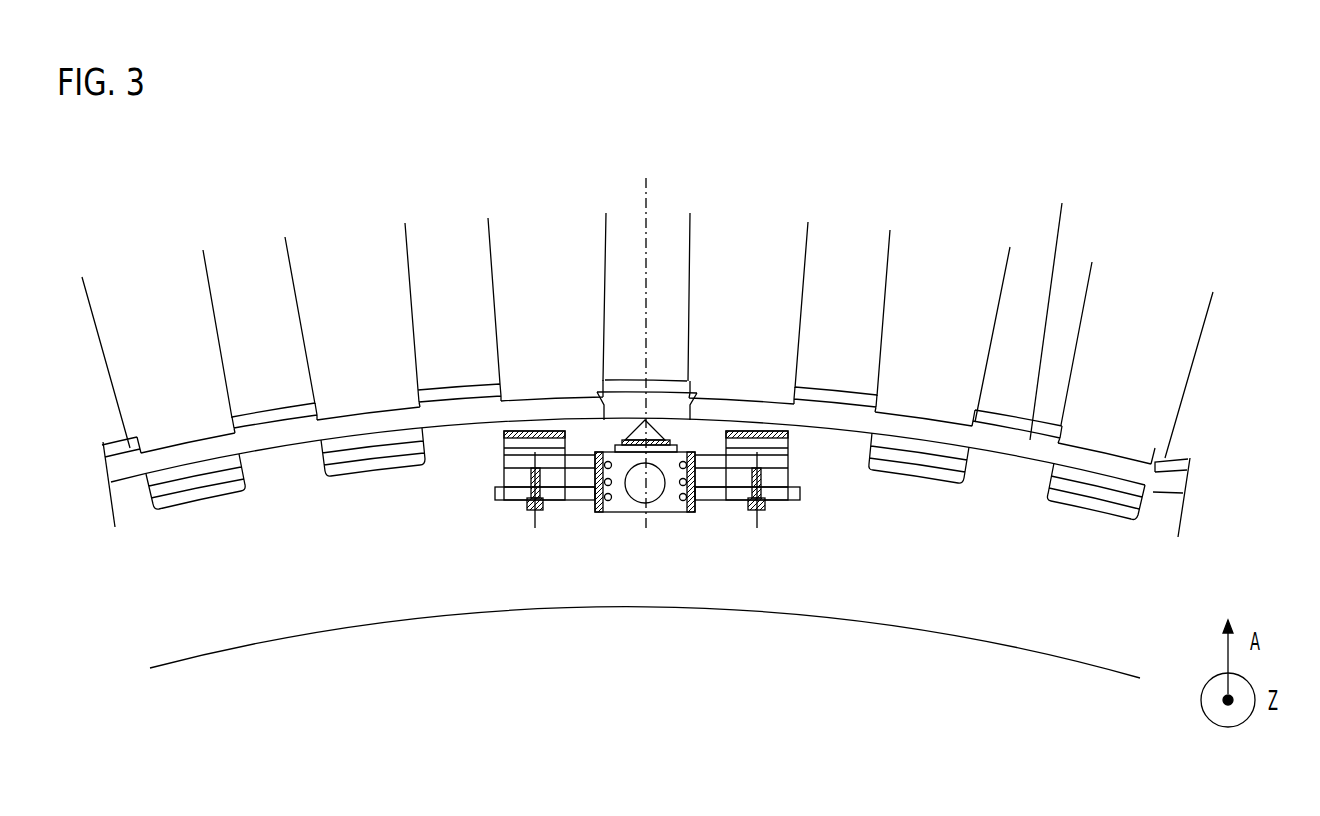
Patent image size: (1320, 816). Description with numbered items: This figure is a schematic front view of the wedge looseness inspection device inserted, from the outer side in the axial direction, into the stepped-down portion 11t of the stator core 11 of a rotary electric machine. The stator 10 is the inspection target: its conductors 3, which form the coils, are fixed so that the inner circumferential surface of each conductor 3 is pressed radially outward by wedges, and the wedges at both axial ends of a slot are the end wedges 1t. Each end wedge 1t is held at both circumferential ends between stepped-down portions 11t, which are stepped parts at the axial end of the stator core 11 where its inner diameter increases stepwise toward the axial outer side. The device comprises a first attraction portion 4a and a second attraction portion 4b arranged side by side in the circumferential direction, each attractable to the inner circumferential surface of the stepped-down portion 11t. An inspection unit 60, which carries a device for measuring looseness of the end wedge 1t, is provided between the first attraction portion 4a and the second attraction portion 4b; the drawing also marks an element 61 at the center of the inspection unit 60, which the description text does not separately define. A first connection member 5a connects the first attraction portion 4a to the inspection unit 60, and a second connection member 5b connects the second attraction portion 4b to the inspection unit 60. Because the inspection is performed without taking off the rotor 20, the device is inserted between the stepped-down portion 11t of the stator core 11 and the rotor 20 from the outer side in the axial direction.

The conductor 3 is at (244, 325).
The stator 10 is at (436, 188).
The sensor target / detection portion 61 is at (660, 397).
The end wedge 1t is at (1051, 303).
The stator core 11 is at (1153, 263).
The stepped-down portion 11t is at (1128, 466).
The second attraction portion 4b is at (500, 458).
The first attraction portion 4a is at (804, 470).
The second connection member 5b is at (573, 505).
The first connection member 5a is at (787, 508).
The inspection unit 60 is at (630, 512).
The rotor 20 is at (377, 622).